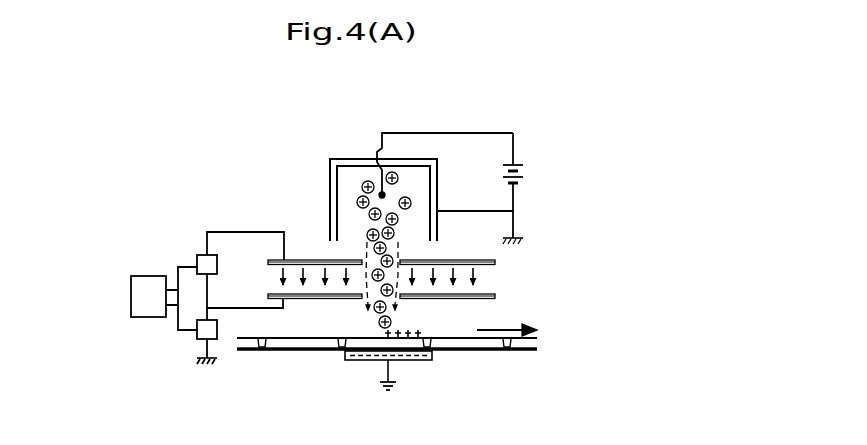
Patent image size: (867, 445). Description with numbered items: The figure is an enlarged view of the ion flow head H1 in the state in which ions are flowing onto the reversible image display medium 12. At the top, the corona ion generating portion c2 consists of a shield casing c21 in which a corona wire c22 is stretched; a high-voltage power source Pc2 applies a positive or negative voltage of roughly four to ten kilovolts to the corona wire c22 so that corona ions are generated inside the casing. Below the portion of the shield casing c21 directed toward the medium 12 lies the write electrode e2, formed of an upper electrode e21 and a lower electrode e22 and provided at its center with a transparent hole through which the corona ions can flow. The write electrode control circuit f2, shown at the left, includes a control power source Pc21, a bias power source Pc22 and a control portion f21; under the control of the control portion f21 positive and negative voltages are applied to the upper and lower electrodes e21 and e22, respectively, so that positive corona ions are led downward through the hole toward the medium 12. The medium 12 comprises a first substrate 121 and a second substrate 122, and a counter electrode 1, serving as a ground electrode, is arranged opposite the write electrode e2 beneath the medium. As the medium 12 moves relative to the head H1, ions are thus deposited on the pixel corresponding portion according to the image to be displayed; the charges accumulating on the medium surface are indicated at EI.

The ion flow head H1 is at (323, 127).
The corona ion generating portion c2 is at (363, 151).
The shield casing c21 is at (330, 175).
The corona wire c22 is at (384, 194).
The high-voltage power source Pc2 is at (527, 170).
The write electrode e2 is at (489, 277).
The upper electrode e21 is at (307, 260).
The lower electrode e22 is at (312, 298).
The write electrode control circuit f2 is at (203, 213).
The control power source Pc21 is at (200, 260).
The bias power source Pc22 is at (203, 330).
The control portion f21 is at (147, 304).
The ions / charges on substrate EI is at (393, 335).
The counter electrode 1 is at (353, 363).
The reversible image display medium 12 is at (503, 354).
The first substrate 121 is at (452, 338).
The second substrate 122 is at (526, 351).